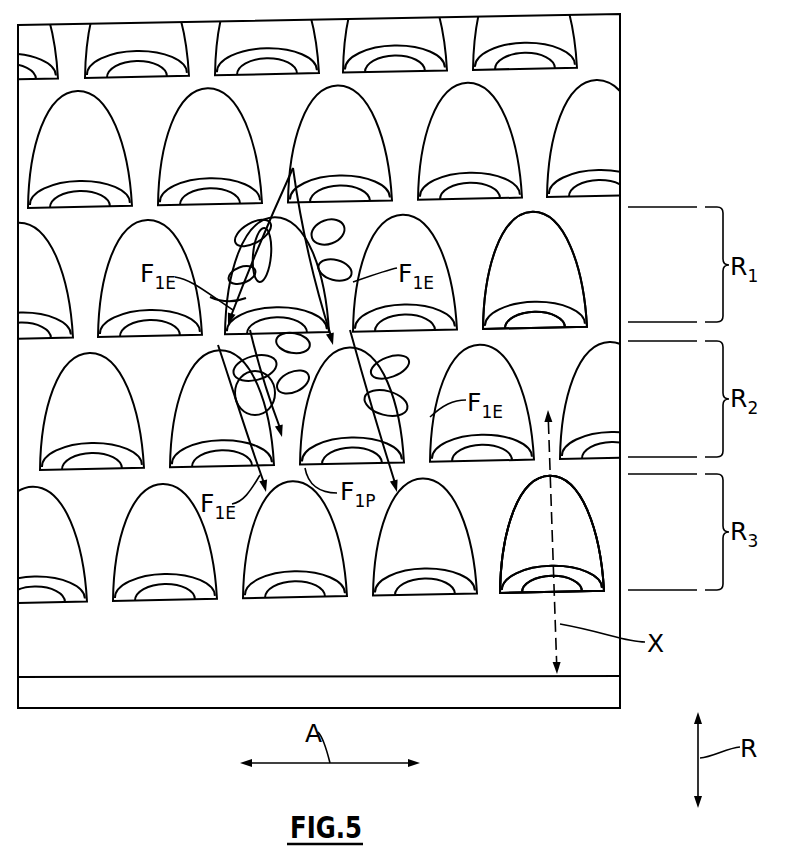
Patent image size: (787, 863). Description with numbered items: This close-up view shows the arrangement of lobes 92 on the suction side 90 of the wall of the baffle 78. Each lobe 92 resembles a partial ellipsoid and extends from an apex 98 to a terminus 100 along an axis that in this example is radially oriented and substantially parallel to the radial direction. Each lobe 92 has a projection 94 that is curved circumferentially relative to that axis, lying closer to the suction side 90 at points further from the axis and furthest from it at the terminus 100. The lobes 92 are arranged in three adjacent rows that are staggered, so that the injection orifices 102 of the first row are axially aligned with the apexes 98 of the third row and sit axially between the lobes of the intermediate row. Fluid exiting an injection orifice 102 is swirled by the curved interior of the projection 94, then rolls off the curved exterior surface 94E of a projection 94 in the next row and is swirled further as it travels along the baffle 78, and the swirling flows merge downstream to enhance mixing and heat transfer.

The baffle 78 is at (633, 147).
The suction side 90 is at (587, 250).
The lobe 92 is at (513, 262).
The projection 94 is at (527, 528).
The exterior surface 94E is at (588, 384).
The apex 98 is at (540, 470).
The terminus 100 is at (580, 561).
The injection orifice 102 is at (542, 318).